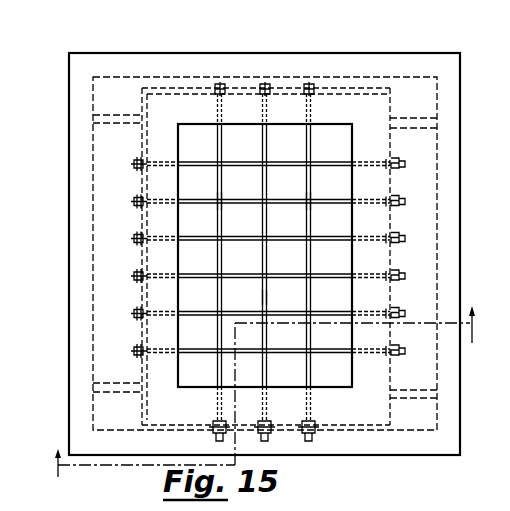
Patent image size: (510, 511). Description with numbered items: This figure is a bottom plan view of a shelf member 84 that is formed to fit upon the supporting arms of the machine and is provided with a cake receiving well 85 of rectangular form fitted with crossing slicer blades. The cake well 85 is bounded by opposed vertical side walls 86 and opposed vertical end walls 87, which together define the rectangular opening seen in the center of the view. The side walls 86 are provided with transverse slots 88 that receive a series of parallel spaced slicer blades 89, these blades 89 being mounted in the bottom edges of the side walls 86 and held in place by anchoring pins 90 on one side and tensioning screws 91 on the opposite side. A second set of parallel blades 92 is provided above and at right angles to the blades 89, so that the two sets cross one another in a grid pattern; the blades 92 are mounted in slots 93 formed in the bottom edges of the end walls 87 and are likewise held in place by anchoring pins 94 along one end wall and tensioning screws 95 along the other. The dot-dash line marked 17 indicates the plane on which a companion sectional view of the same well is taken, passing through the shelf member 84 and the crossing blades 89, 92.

The section line 17- 17 is at (263, 394).
The shelf member 84 is at (115, 53).
The cake receiving well 85 is at (335, 133).
The vertical side walls 86 is at (178, 232).
The vertical end walls 87 is at (251, 80).
The transverse slots 88 is at (360, 160).
The slicer blades 89 is at (279, 237).
The anchoring pins 90 is at (136, 161).
The tensioning screws 91 is at (404, 240).
The second set of parallel blades 92 is at (221, 198).
The slots 93 is at (221, 104).
The anchoring pins 94 is at (216, 84).
The tensioning screws 95 is at (268, 437).